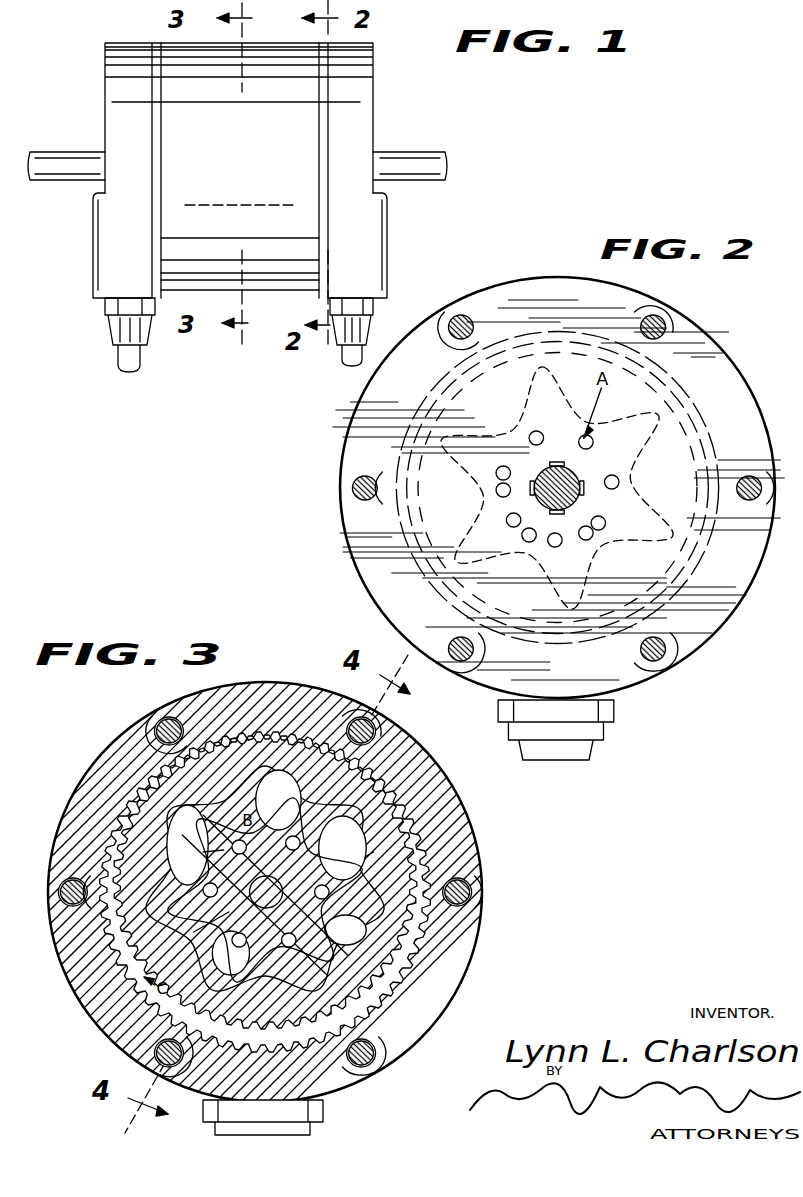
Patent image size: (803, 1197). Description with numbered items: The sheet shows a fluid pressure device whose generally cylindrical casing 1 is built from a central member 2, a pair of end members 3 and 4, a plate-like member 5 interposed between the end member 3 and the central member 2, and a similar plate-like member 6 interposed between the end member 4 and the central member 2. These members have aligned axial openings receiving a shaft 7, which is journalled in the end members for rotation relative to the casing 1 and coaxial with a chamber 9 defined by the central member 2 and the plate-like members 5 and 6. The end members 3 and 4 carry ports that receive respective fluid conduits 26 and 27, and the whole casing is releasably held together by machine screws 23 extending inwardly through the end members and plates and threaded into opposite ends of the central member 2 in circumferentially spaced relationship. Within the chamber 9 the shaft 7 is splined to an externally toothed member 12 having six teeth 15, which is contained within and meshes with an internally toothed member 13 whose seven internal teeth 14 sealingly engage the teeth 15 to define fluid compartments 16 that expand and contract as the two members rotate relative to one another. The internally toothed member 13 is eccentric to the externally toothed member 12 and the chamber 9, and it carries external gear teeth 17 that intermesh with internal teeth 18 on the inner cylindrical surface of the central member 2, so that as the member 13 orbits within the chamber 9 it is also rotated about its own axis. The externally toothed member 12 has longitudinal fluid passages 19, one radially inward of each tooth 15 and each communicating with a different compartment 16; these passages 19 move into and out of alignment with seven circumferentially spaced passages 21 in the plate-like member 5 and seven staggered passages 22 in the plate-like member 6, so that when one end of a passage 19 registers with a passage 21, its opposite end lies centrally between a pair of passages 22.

In FIG. 1, the casing 1 is at (380, 96).
In FIG. 1, the central member 2 is at (248, 176).
In FIG. 3, the central member 2 is at (462, 940).
In FIG. 1, the end member 3 is at (355, 218).
In FIG. 1, the end member 4 is at (115, 228).
In FIG. 1, the plate-like member 5 is at (328, 140).
In FIG. 2, the plate-like member 5 is at (382, 600).
In FIG. 1, the plate-like member 6 is at (150, 103).
In FIG. 3, the plate-like member 6 is at (330, 1060).
In FIG. 1, the shaft 7 is at (433, 160).
In FIG. 3, the chamber 9 is at (97, 1022).
In FIG. 2, the externally toothed member 12 is at (650, 458).
In FIG. 3, the externally toothed member 12 is at (196, 932).
In FIG. 3, the internally toothed member 13 is at (370, 852).
In FIG. 3, the internal teeth 14 is at (432, 802).
In FIG. 3, the teeth 15 is at (352, 839).
In FIG. 3, the fluid compartments 16 is at (282, 821).
In FIG. 3, the external gear teeth 17 is at (395, 985).
In FIG. 3, the internal teeth 18 is at (380, 1040).
In FIG. 2, the fluid passages 19 is at (508, 496).
In FIG. 3, the fluid passages 19 is at (262, 955).
In FIG. 2, the passages 21 is at (540, 432).
In FIG. 3, the passages 22 is at (203, 854).
In FIG. 2, the machine screws 23 is at (658, 320).
In FIG. 3, the machine screws 23 is at (269, 893).
In FIG. 1, the fluid conduit 26 is at (345, 348).
In FIG. 1, the fluid conduit 27 is at (125, 362).